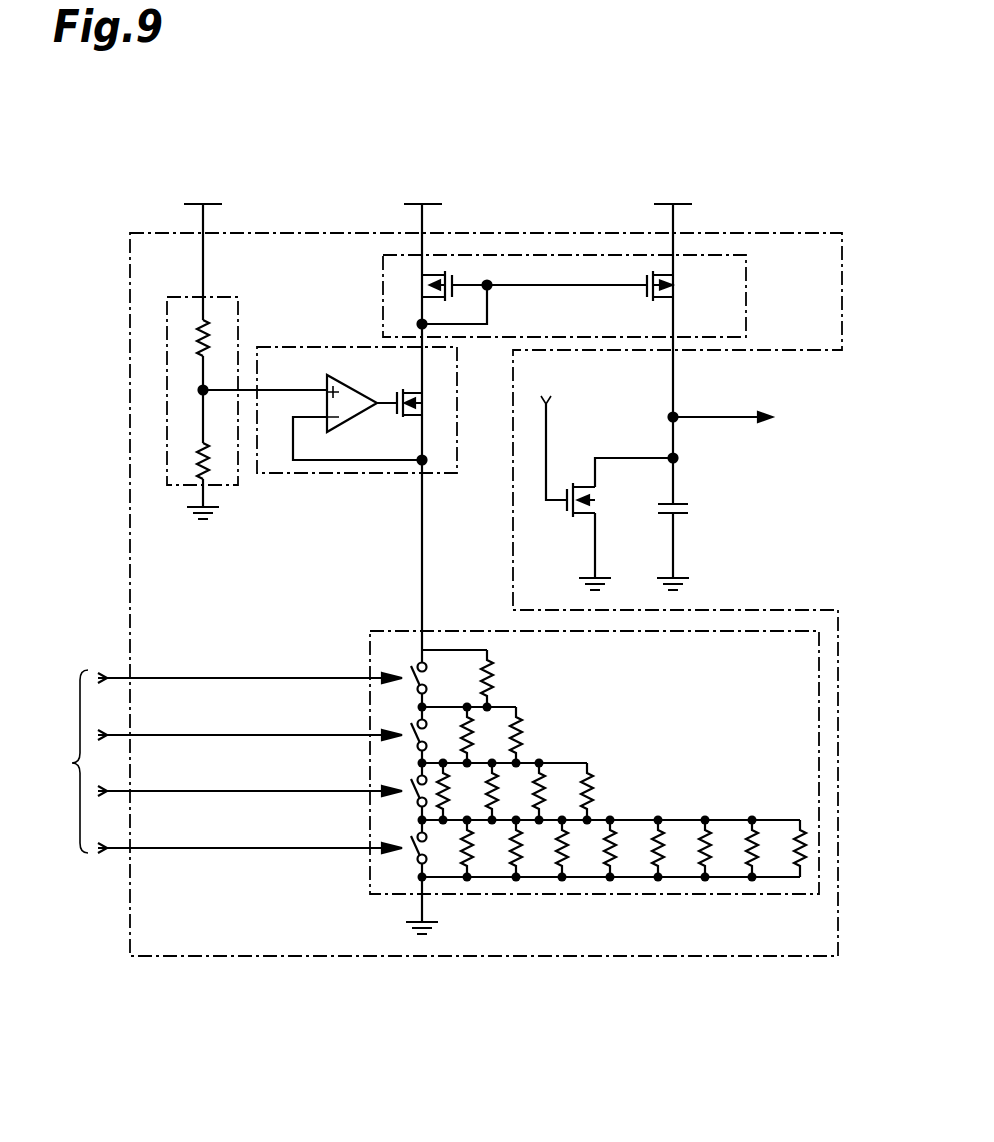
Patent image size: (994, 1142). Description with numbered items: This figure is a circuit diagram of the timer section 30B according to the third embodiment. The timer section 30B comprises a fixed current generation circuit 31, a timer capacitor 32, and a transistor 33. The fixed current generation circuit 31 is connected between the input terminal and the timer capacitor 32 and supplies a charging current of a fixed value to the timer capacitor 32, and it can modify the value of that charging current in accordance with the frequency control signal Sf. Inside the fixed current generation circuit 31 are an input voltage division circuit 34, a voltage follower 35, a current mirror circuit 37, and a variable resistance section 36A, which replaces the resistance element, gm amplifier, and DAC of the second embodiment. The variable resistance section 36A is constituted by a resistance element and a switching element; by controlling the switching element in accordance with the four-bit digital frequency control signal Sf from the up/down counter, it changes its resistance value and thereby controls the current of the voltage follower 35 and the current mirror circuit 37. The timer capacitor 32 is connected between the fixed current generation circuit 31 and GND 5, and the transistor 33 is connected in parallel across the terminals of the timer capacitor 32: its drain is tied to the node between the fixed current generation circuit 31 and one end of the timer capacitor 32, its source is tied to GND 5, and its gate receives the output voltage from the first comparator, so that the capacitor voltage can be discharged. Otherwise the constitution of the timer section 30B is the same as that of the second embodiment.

The timer section 30B is at (641, 88).
The fixed current generation circuit 31 is at (787, 233).
The timer capacitor 32 is at (680, 505).
The transistor 33 is at (562, 493).
The input voltage division circuit 34 is at (227, 295).
The voltage follower 35 is at (310, 345).
The variable resistance section 36A is at (405, 630).
The current mirror circuit 37 is at (382, 275).
The GND 5 is at (211, 503).